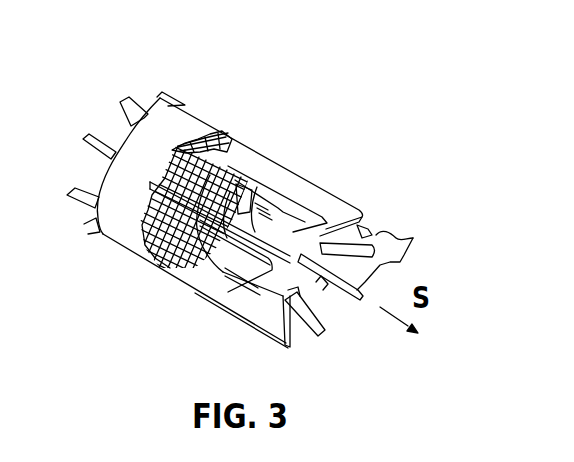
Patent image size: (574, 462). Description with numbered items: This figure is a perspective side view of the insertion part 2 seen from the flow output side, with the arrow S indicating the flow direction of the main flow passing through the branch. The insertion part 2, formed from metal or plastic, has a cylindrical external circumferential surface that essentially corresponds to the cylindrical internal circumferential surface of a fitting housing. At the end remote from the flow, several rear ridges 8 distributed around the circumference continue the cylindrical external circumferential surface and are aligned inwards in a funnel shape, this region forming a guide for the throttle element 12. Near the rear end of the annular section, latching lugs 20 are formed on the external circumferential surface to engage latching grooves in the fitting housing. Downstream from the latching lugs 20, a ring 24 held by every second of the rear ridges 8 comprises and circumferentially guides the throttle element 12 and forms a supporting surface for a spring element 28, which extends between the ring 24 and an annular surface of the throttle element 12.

The insertion part 2 is at (324, 157).
The rear ridges 8 is at (376, 247).
The throttle element 12 is at (210, 280).
The latching lugs 20 is at (212, 128).
The ring 24 is at (162, 277).
The spring element 28 is at (249, 148).